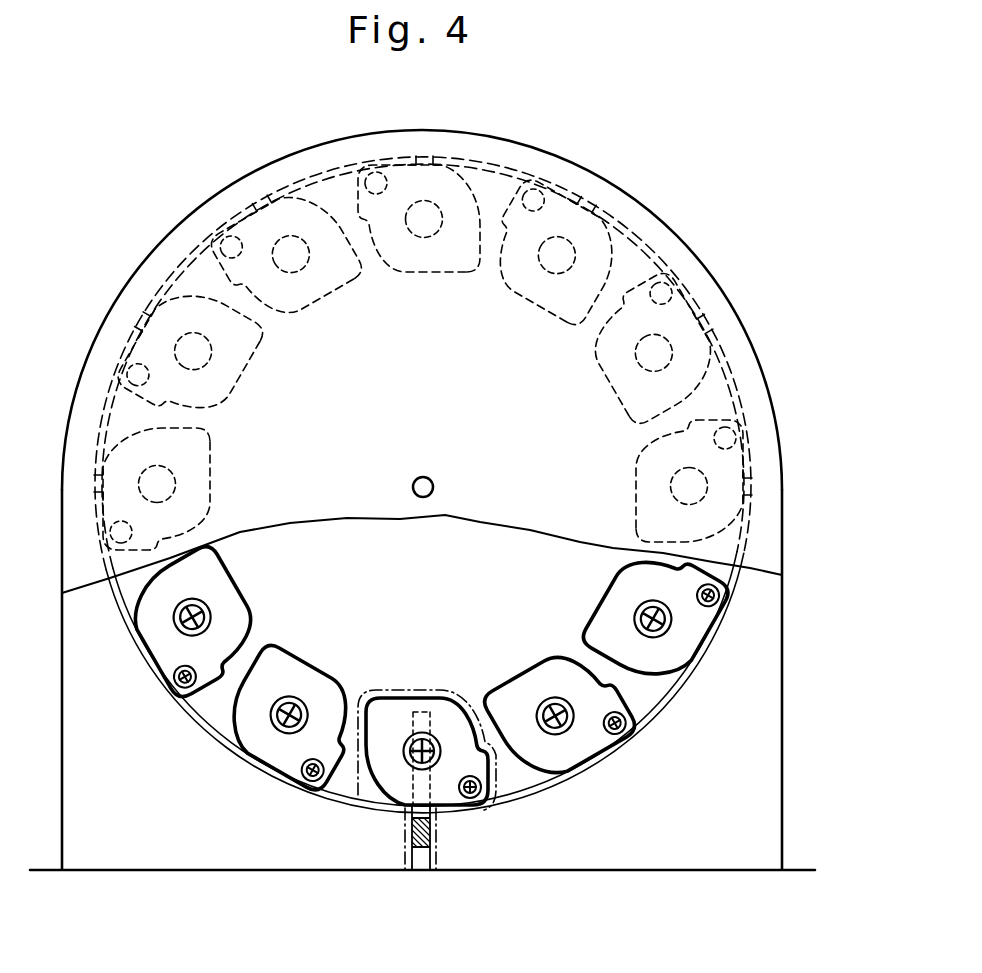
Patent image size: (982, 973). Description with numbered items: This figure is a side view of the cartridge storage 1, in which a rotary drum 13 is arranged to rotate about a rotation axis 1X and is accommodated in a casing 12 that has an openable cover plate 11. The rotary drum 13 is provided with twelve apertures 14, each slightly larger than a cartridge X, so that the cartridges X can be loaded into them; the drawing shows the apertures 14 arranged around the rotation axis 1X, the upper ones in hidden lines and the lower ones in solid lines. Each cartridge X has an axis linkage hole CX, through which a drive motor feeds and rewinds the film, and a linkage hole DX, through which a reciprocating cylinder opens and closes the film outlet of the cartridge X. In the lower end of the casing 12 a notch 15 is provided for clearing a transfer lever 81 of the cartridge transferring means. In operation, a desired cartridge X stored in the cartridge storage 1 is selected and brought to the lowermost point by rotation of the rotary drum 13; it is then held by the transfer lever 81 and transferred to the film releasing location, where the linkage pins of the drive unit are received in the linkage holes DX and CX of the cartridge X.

The cartridge storage 1 is at (197, 208).
The cover plate 11 is at (86, 406).
The casing 12 is at (124, 290).
The rotary drum 13 is at (500, 195).
The aperture 14 is at (362, 787).
The notch 15 is at (423, 858).
The transfer lever 81 is at (422, 698).
The rotation axis 1X is at (428, 480).
The cartridge X is at (282, 668).
The axis linkage hole CX is at (272, 720).
The linkage hole DX is at (293, 787).